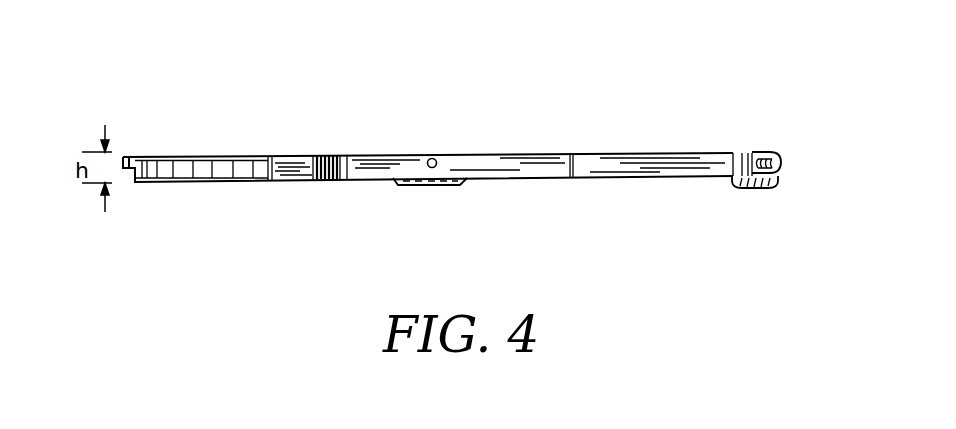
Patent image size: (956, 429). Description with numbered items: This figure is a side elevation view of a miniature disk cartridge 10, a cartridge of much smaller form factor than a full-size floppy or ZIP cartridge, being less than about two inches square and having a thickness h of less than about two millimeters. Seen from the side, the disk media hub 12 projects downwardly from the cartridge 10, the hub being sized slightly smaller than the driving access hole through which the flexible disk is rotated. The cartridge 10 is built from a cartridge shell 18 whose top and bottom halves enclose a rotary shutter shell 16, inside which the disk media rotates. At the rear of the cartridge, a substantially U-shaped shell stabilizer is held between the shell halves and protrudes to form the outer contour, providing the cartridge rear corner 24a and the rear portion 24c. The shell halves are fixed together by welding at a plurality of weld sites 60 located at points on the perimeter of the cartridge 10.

The miniature disk cartridge 10 is at (558, 122).
The disk media hub 12 is at (432, 186).
The rotary shutter shell 16 is at (152, 183).
The cartridge shell 18 is at (513, 180).
The cartridge rear corner 24a is at (657, 170).
The rear portion 24c is at (768, 152).
The weld site 60 is at (430, 158).